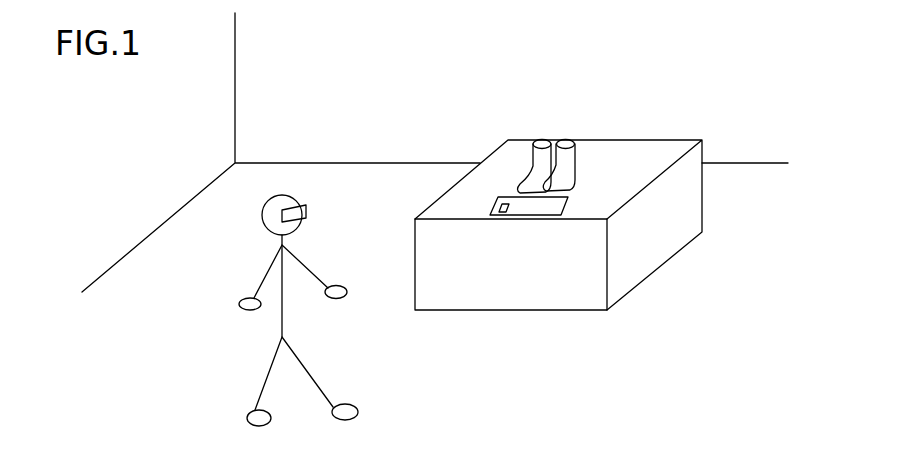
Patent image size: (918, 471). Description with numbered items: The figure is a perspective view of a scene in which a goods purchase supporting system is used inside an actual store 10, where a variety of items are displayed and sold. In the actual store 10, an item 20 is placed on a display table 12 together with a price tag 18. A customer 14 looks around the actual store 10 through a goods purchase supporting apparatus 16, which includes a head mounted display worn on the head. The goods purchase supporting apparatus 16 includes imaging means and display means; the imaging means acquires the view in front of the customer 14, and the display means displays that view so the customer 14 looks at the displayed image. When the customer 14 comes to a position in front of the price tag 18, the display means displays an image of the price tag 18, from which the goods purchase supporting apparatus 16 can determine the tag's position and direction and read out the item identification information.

The actual store 10 is at (334, 80).
The display table 12 is at (660, 243).
The customer 14 is at (263, 218).
The goods purchase supporting apparatus 16 is at (308, 207).
The price tag 18 is at (522, 220).
The item 20 is at (584, 165).